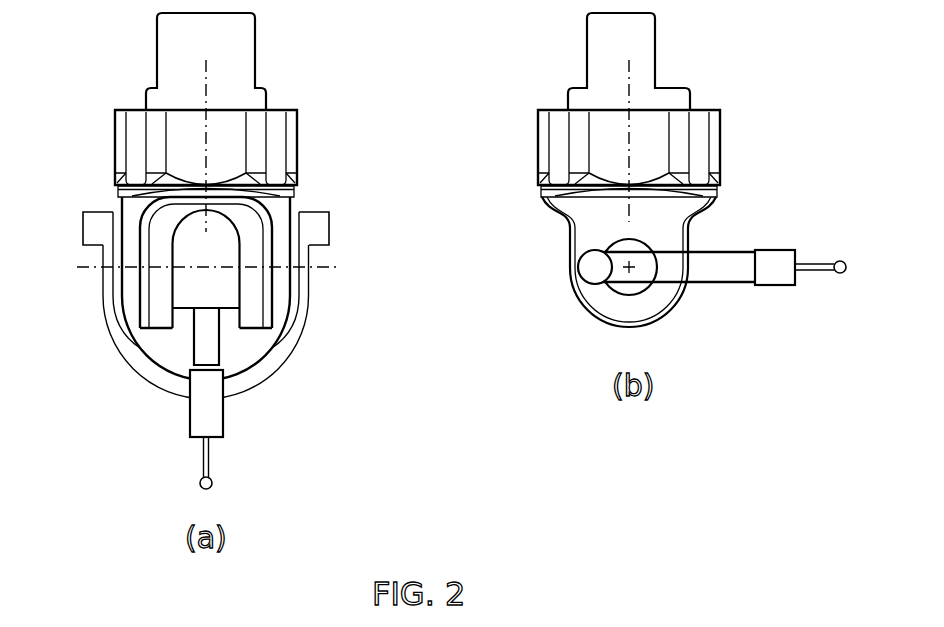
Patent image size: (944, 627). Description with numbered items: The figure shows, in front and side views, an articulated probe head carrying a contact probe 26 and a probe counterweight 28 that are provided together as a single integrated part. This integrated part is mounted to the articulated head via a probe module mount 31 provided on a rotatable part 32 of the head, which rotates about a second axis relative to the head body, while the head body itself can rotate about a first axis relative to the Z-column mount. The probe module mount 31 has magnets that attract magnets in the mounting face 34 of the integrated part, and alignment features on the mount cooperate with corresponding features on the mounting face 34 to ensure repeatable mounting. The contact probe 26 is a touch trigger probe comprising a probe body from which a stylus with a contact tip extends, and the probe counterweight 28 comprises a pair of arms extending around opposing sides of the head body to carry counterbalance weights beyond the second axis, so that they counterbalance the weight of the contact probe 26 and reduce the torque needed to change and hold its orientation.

The contact probe 26 is at (165, 451).
The probe counterweight 28 is at (155, 411).
The probe module mount 31 is at (226, 350).
The rotatable part 32 is at (222, 233).
The mounting face 34 is at (208, 363).